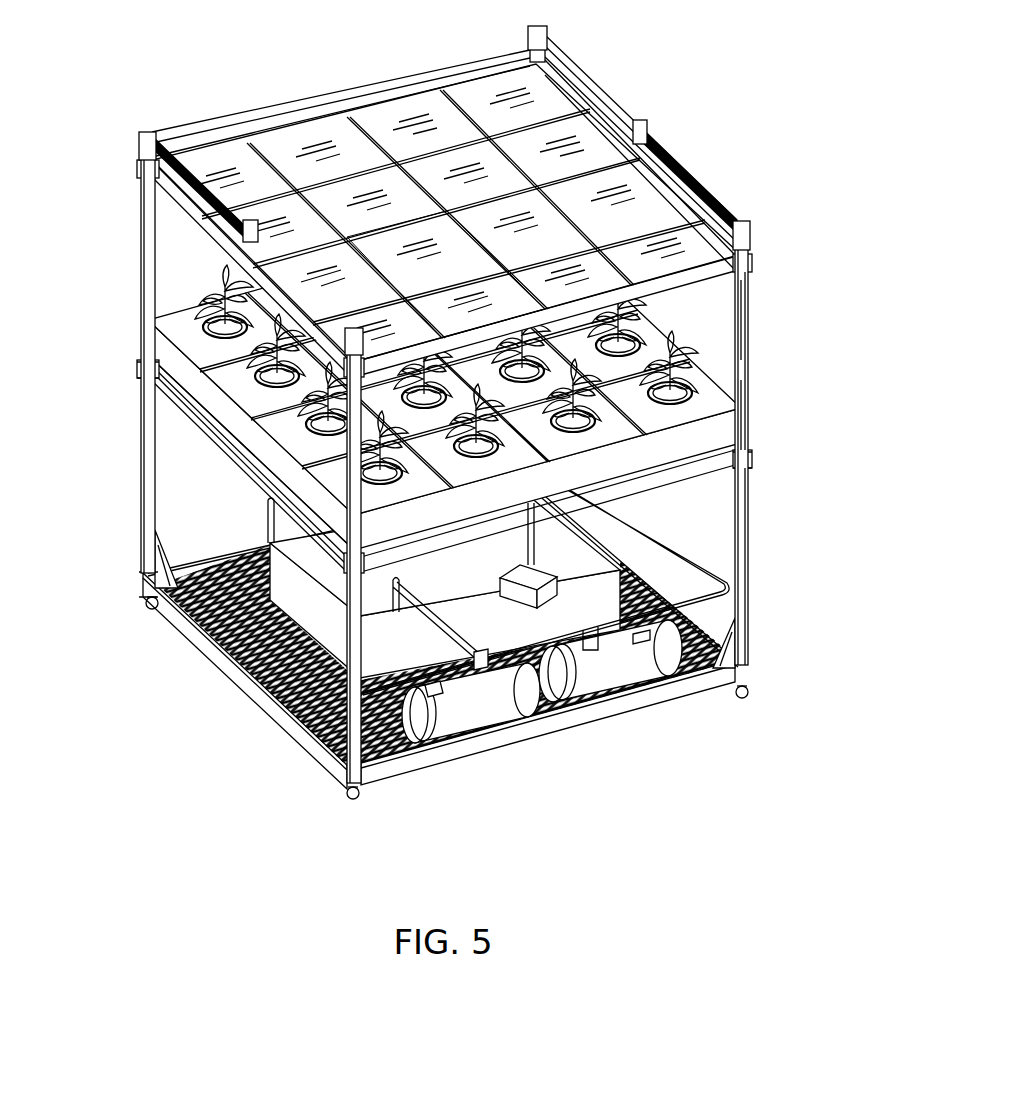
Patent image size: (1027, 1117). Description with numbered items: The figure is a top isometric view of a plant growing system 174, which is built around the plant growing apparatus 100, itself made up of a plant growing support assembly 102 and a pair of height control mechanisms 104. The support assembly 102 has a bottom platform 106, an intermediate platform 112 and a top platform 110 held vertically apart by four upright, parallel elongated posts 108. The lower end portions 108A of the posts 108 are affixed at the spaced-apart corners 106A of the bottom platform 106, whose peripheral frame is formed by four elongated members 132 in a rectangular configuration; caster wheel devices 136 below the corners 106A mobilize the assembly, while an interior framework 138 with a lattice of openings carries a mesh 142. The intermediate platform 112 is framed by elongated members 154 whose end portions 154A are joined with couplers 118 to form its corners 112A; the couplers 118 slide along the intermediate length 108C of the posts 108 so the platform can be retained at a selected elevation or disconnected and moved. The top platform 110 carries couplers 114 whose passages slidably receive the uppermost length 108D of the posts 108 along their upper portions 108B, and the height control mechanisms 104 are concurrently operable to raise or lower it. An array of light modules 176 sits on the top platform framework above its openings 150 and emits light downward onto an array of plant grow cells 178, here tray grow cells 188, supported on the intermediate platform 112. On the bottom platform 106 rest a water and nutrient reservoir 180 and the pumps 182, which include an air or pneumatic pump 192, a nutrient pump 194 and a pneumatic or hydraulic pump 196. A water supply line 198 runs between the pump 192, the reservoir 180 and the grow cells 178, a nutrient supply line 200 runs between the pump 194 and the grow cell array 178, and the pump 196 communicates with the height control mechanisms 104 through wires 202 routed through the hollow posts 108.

The plant growing apparatus 100 is at (436, 423).
The plant growing support assembly 102 is at (392, 493).
The height control mechanisms 104 is at (256, 218).
The bottom platform 106 is at (400, 664).
The corners of the bottom platform 106A is at (142, 598).
The elongated posts 108 is at (137, 216).
The lower end portions of the posts 108A is at (756, 660).
The upper portions of the posts 108B is at (760, 265).
The intermediate length of the posts 108C is at (752, 437).
The uppermost length of the posts 108D is at (747, 238).
The top platform 110 is at (203, 230).
The intermediate platform 112 is at (210, 420).
The corners of the intermediate platform 112A is at (138, 352).
The couplers of the top platform 114 is at (365, 392).
The couplers of the intermediate platform 118 is at (362, 568).
The elongated members 132 is at (240, 553).
The caster wheel devices 136 is at (348, 800).
The interior framework of the bottom platform 138 is at (250, 652).
The mesh 142 is at (197, 600).
The openings of the top platform 150 is at (458, 150).
The elongated members of the intermediate platform 154 is at (233, 442).
The end portions of the elongated members 154A is at (200, 383).
The plant growing system 174 is at (447, 182).
The array of light modules 176 is at (464, 229).
The array of plant grow cells 178 is at (207, 420).
The water and nutrient reservoir 180 is at (299, 619).
The pumps 182 is at (542, 704).
The tray grow cells 188 is at (417, 381).
The air or pneumatic pump 192 is at (454, 711).
The nutrient pump 194 is at (500, 583).
The pneumatic or hydraulic pump 196 is at (610, 661).
The water supply line 198 is at (265, 520).
The nutrient supply line 200 is at (537, 540).
The wires 202 is at (400, 680).